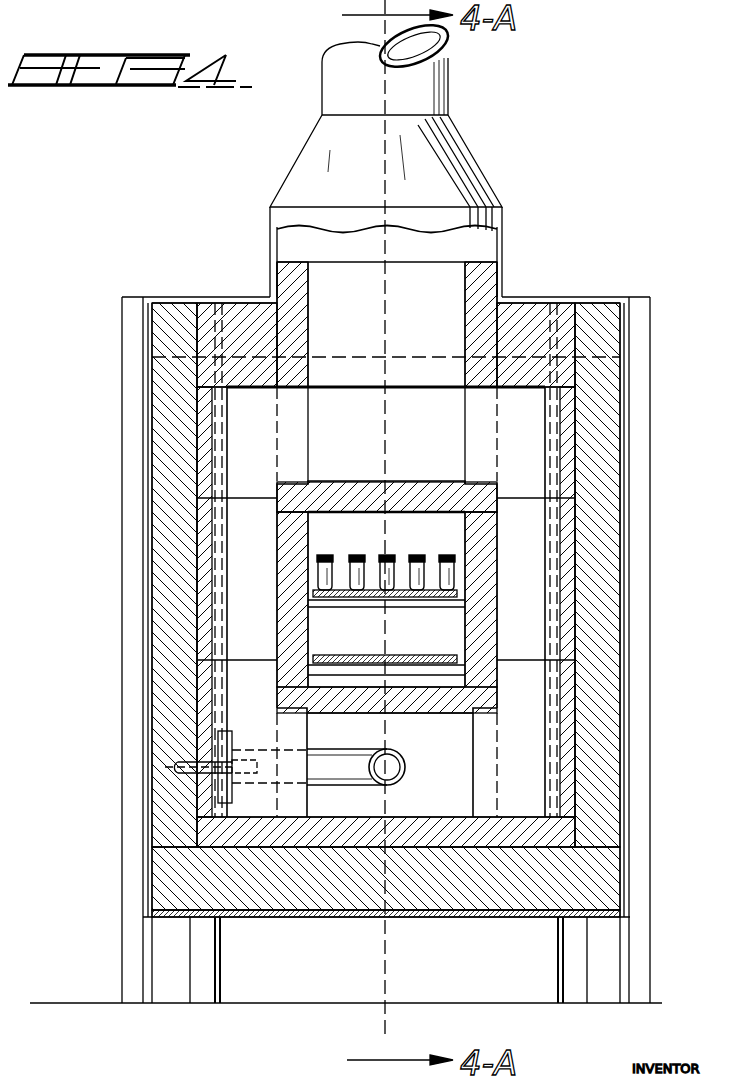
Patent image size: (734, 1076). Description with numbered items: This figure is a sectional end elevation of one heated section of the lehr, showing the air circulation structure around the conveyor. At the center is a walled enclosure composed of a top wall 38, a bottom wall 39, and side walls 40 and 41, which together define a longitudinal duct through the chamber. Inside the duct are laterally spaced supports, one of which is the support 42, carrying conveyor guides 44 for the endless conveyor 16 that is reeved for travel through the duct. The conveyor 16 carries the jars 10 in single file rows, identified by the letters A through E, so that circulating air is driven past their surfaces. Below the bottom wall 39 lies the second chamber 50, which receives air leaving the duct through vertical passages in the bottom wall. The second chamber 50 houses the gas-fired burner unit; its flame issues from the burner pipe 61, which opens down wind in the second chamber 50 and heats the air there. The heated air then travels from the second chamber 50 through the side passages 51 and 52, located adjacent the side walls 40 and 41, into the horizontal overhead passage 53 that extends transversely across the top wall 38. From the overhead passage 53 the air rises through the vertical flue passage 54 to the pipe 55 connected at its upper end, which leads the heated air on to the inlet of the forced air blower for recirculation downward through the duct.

The jars 10 is at (329, 560).
The conveyor 16 is at (459, 595).
The top wall 38 is at (433, 450).
The bottom wall 39 is at (497, 703).
The side wall 40 is at (283, 573).
The side wall 41 is at (488, 563).
The support 42 is at (372, 672).
The conveyor guides 44 is at (322, 598).
The second chamber 50 is at (449, 800).
The side passage 51 is at (263, 641).
The side passage 52 is at (538, 641).
The overhead passage 53 is at (374, 441).
The vertical flue passage 54 is at (406, 336).
The pipe 55 is at (437, 99).
The burner pipe 61 is at (399, 754).